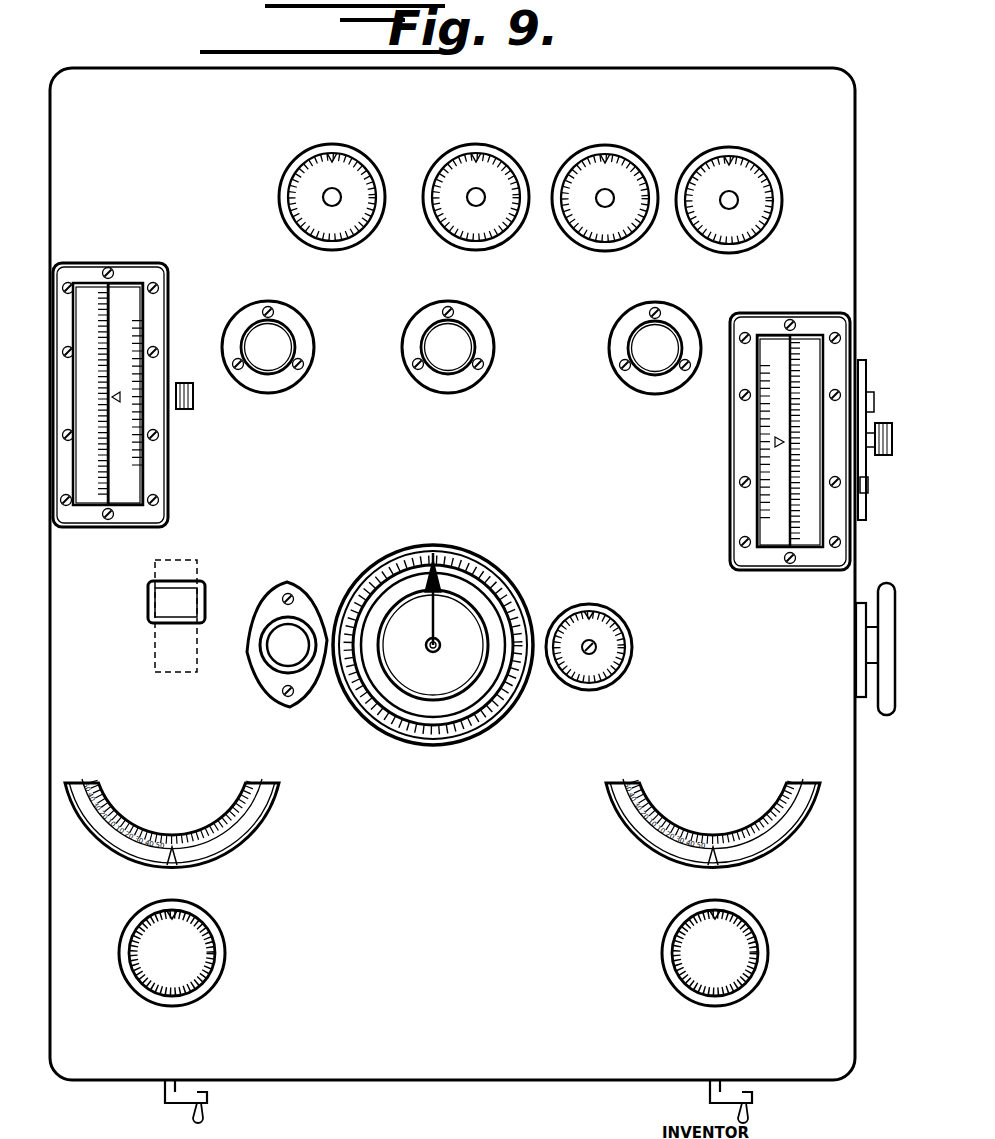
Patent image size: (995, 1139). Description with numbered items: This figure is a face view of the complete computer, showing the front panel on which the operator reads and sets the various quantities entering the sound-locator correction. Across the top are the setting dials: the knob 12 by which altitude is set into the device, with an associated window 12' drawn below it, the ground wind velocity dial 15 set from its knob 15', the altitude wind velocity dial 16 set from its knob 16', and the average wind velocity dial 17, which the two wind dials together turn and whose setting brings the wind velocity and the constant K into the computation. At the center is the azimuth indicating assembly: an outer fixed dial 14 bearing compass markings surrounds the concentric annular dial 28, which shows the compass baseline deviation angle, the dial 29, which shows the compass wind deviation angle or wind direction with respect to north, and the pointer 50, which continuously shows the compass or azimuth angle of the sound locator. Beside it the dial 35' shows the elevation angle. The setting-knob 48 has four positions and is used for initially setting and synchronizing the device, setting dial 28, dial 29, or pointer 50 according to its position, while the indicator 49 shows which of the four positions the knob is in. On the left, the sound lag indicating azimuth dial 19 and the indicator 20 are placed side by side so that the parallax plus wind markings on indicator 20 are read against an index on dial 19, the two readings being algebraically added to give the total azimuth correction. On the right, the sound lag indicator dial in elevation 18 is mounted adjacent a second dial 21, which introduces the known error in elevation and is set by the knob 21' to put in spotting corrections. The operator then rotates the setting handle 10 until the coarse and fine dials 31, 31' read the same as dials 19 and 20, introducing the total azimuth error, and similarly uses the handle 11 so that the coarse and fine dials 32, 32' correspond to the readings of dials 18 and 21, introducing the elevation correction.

The setting handle 10 is at (206, 1115).
The handle 11 is at (752, 1111).
The knob 12 is at (320, 188).
The indicator window 12' is at (268, 347).
The outer fixed dial 14 is at (448, 655).
The ground wind velocity dial 15 is at (479, 177).
The knob 15' is at (448, 347).
The altitude wind velocity dial 16 is at (739, 189).
The knob 16' is at (655, 348).
The average wind velocity dial 17 is at (602, 225).
The sound lag indicator dial in elevation 18 is at (770, 535).
The sound lag indicating azimuth dial 19 is at (130, 297).
The indicator 20 is at (92, 290).
The second dial 21 is at (790, 464).
The knob 21' is at (884, 440).
The concentric annular dial 28 is at (497, 602).
The dial 29 is at (477, 685).
The coarse dial 31 is at (191, 958).
The fine dial 31' is at (172, 821).
The coarse dial 32 is at (700, 963).
The fine dial 32' is at (713, 821).
The dial 35' is at (618, 647).
The setting-knob 48 is at (278, 648).
The indicator 49 is at (190, 592).
The pointer 50 is at (432, 616).